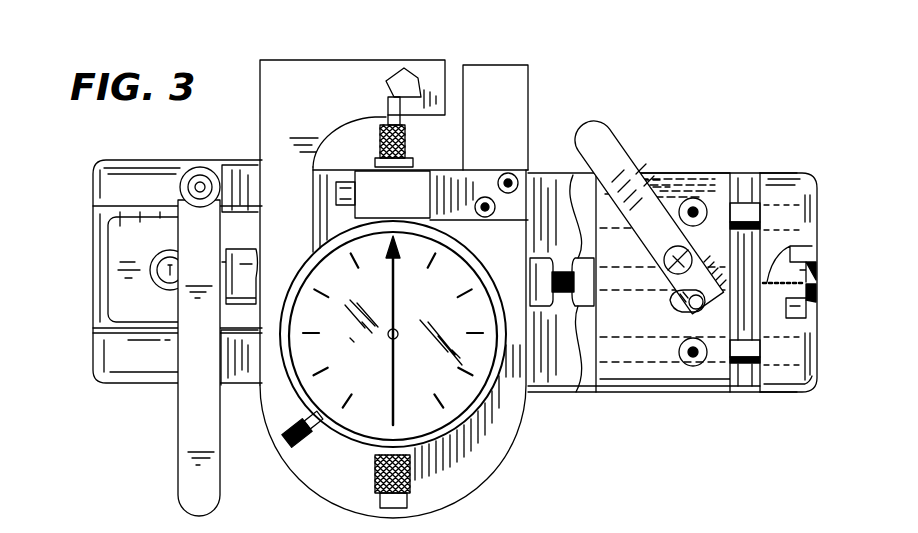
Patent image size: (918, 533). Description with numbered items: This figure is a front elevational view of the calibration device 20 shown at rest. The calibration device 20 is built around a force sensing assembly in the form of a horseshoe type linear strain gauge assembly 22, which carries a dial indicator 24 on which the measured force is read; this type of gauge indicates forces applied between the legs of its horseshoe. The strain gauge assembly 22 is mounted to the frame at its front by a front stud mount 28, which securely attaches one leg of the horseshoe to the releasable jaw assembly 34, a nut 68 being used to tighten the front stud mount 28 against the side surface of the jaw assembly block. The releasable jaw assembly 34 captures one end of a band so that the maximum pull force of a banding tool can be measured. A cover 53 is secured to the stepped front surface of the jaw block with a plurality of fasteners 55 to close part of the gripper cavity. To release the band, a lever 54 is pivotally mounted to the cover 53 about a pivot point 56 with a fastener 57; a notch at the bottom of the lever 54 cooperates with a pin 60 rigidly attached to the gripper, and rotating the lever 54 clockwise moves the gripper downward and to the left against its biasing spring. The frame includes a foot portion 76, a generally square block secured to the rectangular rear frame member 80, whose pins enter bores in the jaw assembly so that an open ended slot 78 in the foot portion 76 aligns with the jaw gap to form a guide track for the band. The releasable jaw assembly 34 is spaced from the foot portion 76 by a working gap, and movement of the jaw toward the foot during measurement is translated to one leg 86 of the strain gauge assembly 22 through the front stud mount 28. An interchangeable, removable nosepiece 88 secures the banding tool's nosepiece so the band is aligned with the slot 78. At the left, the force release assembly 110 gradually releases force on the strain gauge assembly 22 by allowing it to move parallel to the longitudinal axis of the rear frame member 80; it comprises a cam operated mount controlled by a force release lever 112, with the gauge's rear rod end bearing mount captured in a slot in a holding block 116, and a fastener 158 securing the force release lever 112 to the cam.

The calibration device 20 is at (598, 88).
The strain gauge assembly 22 is at (380, 60).
The dial indicator 24 is at (453, 430).
The front stud mount 28 is at (562, 386).
The releasable jaw assembly 34 is at (678, 173).
The cover 53 is at (712, 175).
The lever 54 is at (616, 142).
The fasteners 55 is at (697, 198).
The pivot point 56 is at (683, 312).
The fastener 57 is at (666, 295).
The pin 60 is at (698, 314).
The nut 68 is at (573, 174).
The foot portion 76 is at (805, 174).
The open ended slot 78 is at (796, 258).
The rear frame member 80 is at (250, 167).
The leg 86 is at (523, 64).
The removable nosepiece 88 is at (808, 306).
The force release assembly 110 is at (85, 171).
The force release lever 112 is at (221, 508).
The holding block 116 is at (118, 294).
The fastener 158 is at (192, 170).